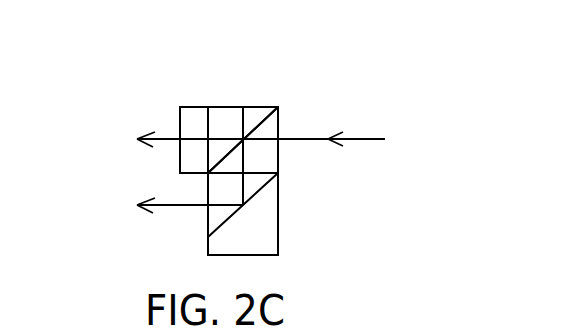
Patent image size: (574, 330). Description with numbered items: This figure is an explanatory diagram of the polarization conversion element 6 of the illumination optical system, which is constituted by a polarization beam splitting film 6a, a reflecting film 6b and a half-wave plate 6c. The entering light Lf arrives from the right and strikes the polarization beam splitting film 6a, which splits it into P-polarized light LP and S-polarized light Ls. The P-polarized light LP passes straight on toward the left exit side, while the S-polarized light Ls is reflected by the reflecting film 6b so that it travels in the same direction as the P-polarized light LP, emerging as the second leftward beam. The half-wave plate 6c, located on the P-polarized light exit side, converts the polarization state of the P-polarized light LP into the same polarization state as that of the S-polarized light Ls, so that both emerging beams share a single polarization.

The polarization conversion element 6 is at (240, 85).
The polarization beam splitting film 6a is at (262, 107).
The reflecting film 6b is at (270, 185).
The half-wave plate 6c is at (193, 117).
The P-polarized light LP is at (224, 137).
The entering light Lf is at (331, 129).
The S-polarized light Ls is at (195, 162).